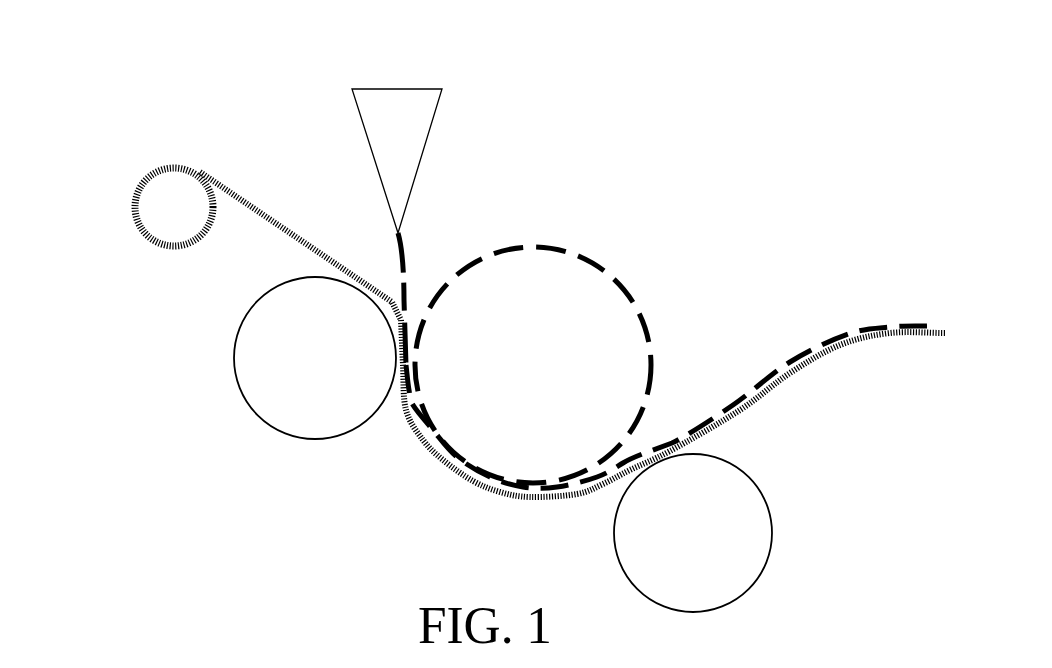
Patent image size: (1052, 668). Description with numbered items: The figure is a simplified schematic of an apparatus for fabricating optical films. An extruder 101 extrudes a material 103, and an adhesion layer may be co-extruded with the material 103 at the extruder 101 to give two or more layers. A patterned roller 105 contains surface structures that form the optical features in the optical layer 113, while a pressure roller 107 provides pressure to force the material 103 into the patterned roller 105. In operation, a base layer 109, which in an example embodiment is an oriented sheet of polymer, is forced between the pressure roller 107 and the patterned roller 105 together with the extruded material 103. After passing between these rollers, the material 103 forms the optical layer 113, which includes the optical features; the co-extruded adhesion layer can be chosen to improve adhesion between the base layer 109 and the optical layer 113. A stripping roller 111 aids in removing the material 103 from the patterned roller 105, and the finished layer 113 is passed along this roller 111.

The extruder 101 is at (418, 122).
The material 103 is at (403, 268).
The patterned roller 105 is at (608, 345).
The pressure roller 107 is at (277, 375).
The base layer 109 is at (237, 193).
The stripping roller 111 is at (772, 523).
The optical layer 113 is at (640, 452).